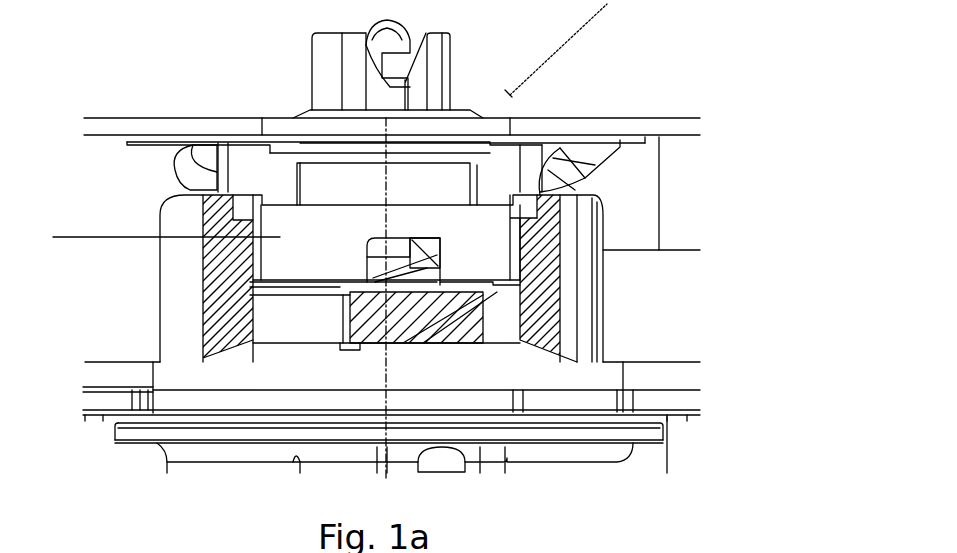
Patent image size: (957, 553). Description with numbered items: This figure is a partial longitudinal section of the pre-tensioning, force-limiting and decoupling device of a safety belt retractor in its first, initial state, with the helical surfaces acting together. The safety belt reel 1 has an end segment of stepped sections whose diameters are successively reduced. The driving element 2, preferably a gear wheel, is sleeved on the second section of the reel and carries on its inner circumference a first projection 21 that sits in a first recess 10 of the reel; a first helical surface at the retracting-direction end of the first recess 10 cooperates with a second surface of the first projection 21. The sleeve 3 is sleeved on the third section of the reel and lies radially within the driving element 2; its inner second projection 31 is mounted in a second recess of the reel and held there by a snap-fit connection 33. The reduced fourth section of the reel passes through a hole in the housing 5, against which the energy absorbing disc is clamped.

The safety belt reel 1 is at (175, 393).
The driving element 2 is at (225, 277).
The sleeve 3 is at (160, 245).
The housing 5 is at (672, 132).
The first recess 10 is at (367, 347).
The first projection 21 is at (520, 315).
The second projection 31 is at (373, 268).
The snap-fit connection 33 is at (443, 253).